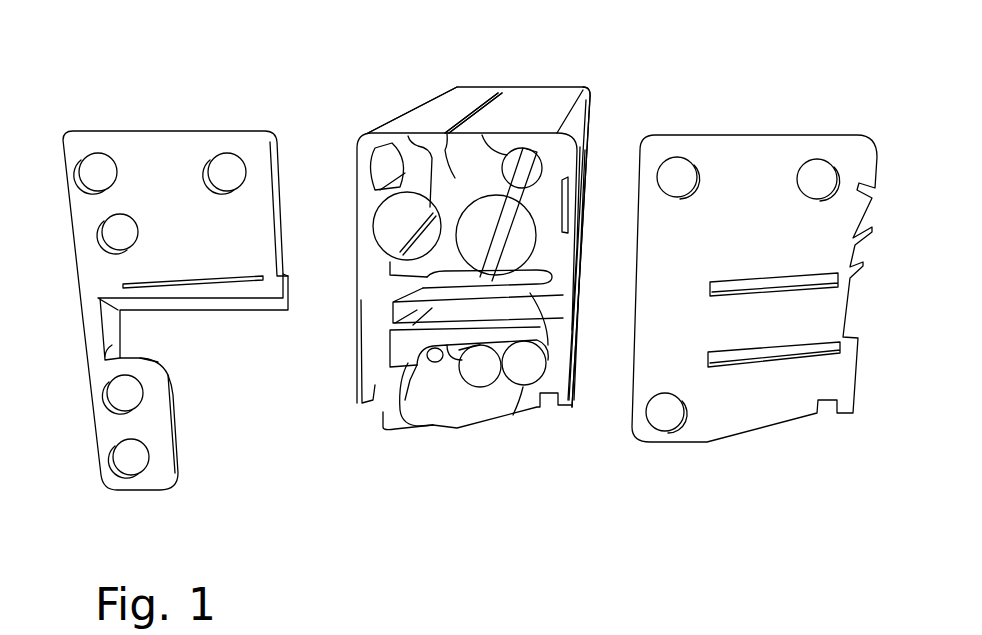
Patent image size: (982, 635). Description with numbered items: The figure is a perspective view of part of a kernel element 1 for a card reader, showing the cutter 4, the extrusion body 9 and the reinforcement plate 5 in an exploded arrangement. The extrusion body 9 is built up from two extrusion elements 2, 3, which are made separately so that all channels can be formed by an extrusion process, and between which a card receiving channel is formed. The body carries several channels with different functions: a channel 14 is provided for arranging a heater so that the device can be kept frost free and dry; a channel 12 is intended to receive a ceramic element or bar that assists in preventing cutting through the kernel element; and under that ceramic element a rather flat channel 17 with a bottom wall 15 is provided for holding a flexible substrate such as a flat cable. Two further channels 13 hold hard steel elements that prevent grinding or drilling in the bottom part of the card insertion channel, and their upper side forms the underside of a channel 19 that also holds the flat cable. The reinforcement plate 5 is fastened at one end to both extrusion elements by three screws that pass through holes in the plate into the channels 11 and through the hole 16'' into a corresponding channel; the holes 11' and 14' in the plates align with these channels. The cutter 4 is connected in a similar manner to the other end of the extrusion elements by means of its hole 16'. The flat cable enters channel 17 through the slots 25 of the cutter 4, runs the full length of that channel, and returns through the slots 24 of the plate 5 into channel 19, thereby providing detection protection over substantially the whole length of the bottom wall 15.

The kernel element 1 is at (577, 63).
The extrusion element 2 is at (432, 106).
The extrusion element 3 is at (593, 100).
The cutter 4 is at (133, 320).
The reinforcement plate 5 is at (780, 130).
The extrusion body 9 is at (352, 326).
The channel 11 is at (419, 109).
The bore 11' is at (457, 148).
The channel 12 is at (477, 197).
The channel 13 is at (523, 390).
The channel 14 is at (385, 203).
The hole 14' is at (143, 216).
The bottom wall 15 is at (540, 343).
The hole 16' is at (103, 430).
The hole 16'' is at (676, 386).
The channel 17 is at (547, 257).
The channel 19 is at (428, 356).
The slot 24 is at (725, 358).
The slot 25 is at (180, 280).